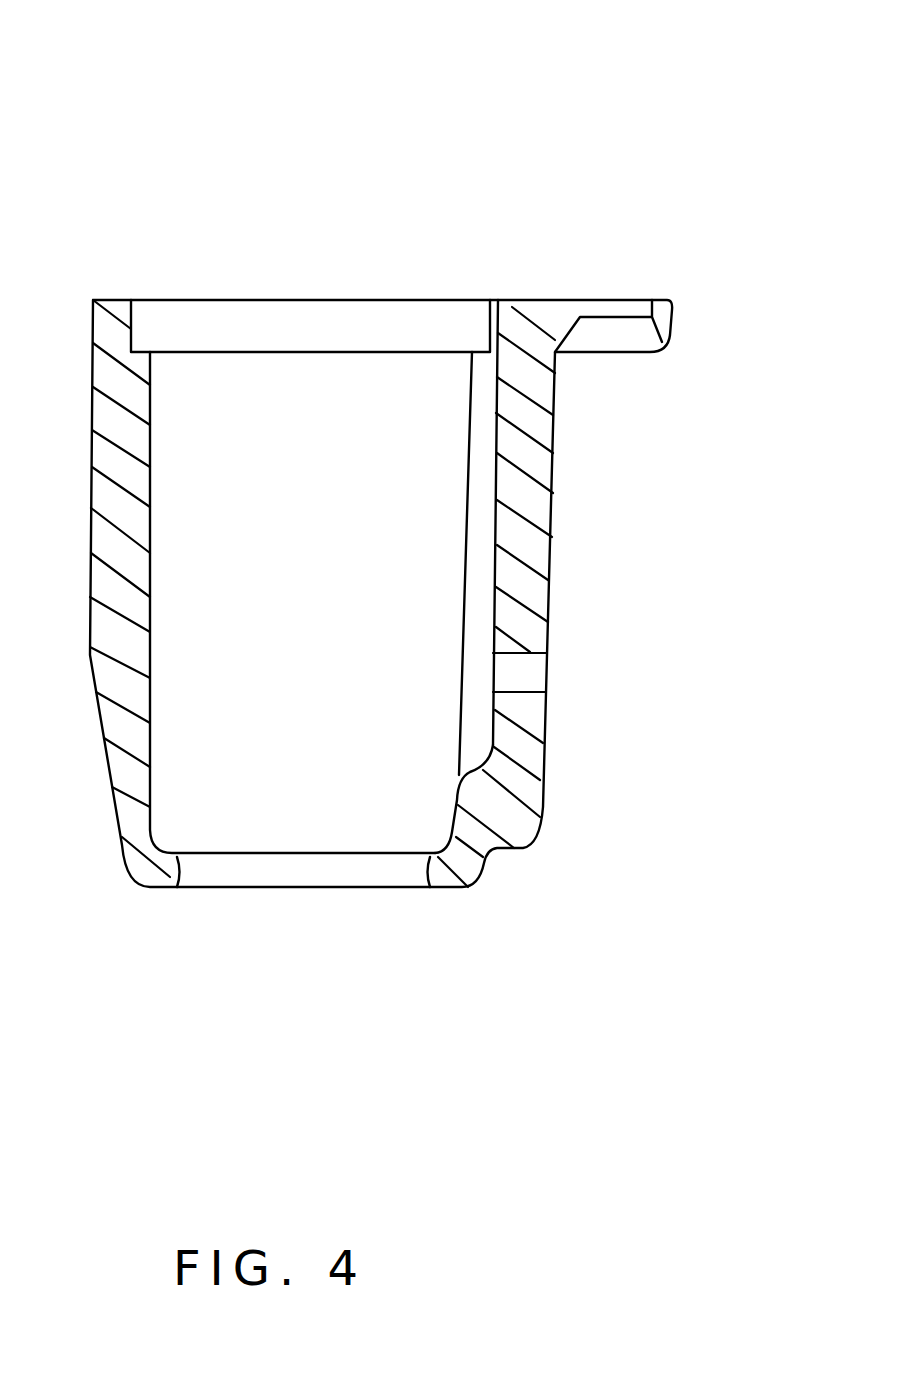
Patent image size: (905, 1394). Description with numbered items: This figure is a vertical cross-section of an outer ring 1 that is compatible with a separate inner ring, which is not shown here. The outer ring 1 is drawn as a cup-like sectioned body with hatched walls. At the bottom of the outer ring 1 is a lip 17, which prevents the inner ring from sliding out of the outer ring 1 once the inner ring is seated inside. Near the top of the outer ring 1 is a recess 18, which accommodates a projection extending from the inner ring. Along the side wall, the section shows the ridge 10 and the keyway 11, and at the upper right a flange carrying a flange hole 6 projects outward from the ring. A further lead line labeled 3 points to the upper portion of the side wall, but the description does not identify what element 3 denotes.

The outer ring 1 is at (335, 265).
The side wall 3 is at (551, 318).
The flange hole 6 is at (607, 333).
The ridge 10 is at (518, 588).
The keyway 11 is at (472, 532).
The lip 17 is at (440, 870).
The recess 18 is at (190, 322).